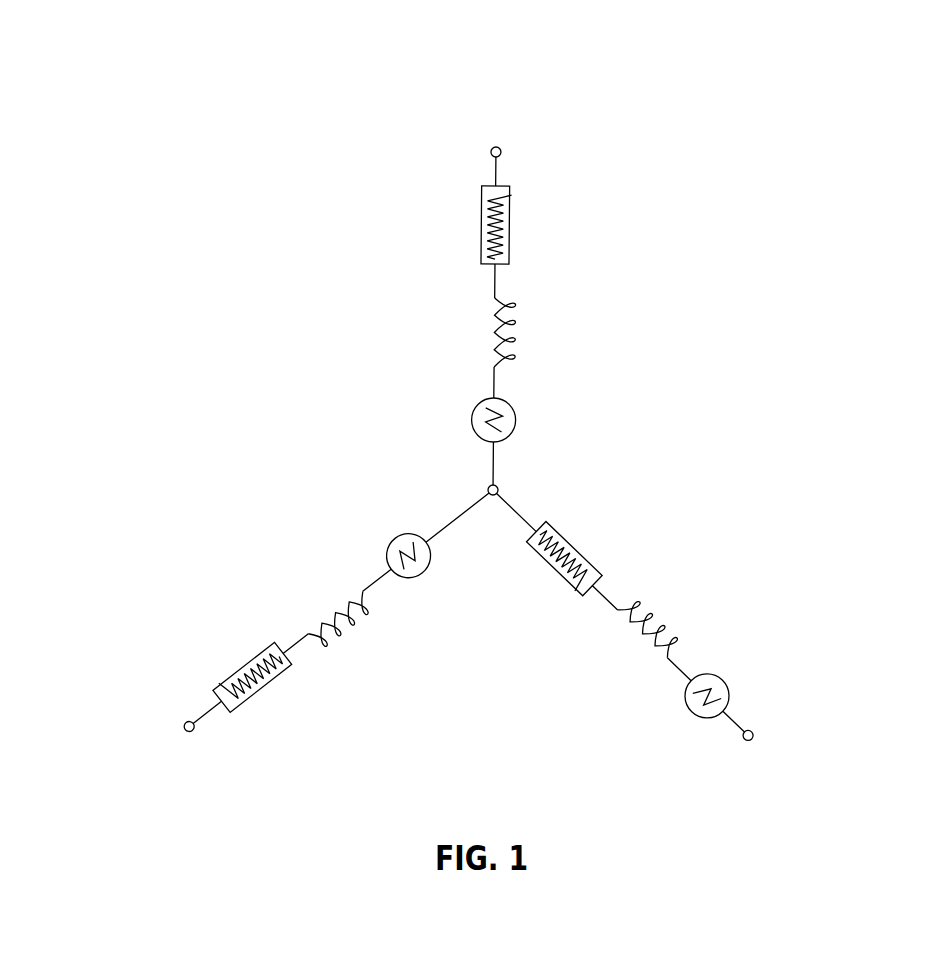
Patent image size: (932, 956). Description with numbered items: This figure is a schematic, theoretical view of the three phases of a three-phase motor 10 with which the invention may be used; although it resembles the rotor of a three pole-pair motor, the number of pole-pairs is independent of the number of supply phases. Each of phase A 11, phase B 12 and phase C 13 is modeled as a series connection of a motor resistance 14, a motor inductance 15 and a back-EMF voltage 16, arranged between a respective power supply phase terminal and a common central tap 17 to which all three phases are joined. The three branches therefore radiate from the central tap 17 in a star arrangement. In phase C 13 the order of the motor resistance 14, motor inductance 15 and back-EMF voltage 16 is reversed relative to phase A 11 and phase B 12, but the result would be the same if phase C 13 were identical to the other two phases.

The three-phase motor 10 is at (405, 66).
The phase A 11 is at (501, 95).
The phase B 12 is at (84, 733).
The phase C 13 is at (860, 738).
The motor resistance 14 is at (511, 220).
The motor inductance 15 is at (521, 316).
The back-EMF voltage 16 is at (515, 405).
The central tap 17 is at (488, 488).